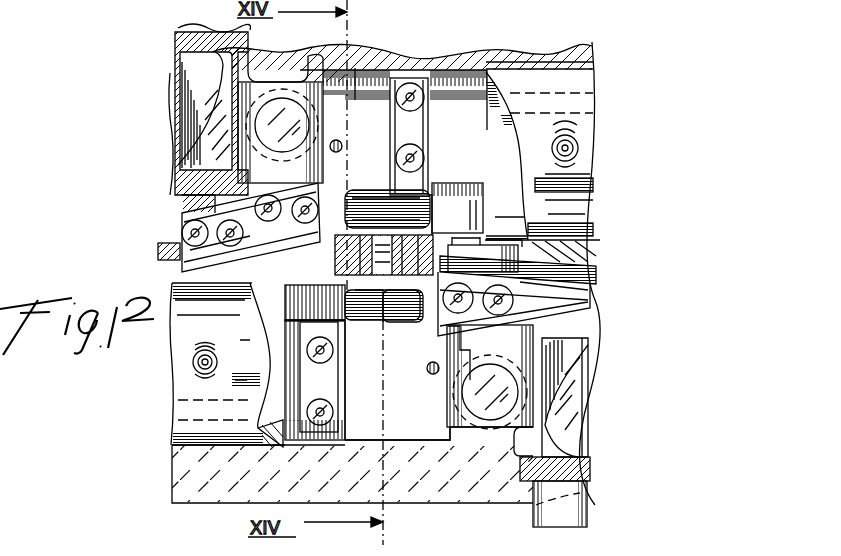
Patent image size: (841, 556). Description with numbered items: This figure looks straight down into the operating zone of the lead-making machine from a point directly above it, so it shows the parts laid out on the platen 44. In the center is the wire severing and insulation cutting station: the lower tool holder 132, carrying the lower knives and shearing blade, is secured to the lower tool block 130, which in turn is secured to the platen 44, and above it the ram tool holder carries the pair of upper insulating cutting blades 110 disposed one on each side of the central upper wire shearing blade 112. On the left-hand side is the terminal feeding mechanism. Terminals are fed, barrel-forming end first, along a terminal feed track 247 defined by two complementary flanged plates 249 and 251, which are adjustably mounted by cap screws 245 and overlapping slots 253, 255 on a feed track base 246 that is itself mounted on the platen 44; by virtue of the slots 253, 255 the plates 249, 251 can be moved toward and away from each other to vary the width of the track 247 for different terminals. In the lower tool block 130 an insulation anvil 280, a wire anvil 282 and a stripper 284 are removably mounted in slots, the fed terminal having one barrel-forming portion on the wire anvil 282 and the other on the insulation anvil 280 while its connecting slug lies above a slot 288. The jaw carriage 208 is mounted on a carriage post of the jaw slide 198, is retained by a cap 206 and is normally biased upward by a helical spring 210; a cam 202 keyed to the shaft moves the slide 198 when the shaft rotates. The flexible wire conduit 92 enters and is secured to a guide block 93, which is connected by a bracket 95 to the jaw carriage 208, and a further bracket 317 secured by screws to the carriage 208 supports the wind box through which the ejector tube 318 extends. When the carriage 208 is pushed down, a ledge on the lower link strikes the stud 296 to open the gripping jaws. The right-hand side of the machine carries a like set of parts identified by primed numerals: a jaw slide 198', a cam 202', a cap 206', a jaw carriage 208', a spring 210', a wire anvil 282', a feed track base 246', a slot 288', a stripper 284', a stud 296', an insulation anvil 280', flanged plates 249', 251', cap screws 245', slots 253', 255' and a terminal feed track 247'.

The platen 44 is at (529, 50).
The upper end plate 198' is at (184, 102).
The upper side member 202' is at (173, 123).
The upper recess 206' is at (278, 65).
The upper wall portion 208' is at (296, 53).
The upper bearing bore 210' is at (280, 134).
The upper roller support 282' is at (405, 136).
The upper cavity wall 246' is at (480, 156).
The upper guide plate 288' is at (453, 191).
The upper guide wall 284' is at (384, 61).
The upper pin 296' is at (360, 128).
The upper block 280' is at (380, 189).
The upper wire shearing blade 112 is at (428, 222).
The lower tool holder 132 is at (432, 258).
The upper insulating cutting blades 110 is at (355, 278).
The upper plate 251' is at (568, 87).
The upper fastener head 255' is at (608, 130).
The upper screw 245' is at (604, 148).
The upper washer 253' is at (601, 181).
The upper bar 247' is at (601, 206).
The upper strip 249' is at (571, 231).
The ejector tube 318 is at (592, 254).
The bracket 317 is at (559, 301).
The cam 202 is at (599, 397).
The jaw slide 198 is at (584, 487).
The guide block 93 is at (177, 212).
The bracket 95 is at (218, 206).
The flexible wire conduit 92 is at (158, 252).
The flanged plate 249 is at (226, 365).
The terminal feed track 247 is at (177, 326).
The slot 253 is at (157, 358).
The cap screws 245 is at (161, 372).
The slot 255 is at (175, 406).
The flanged plate 251 is at (198, 434).
The slot 288 is at (315, 380).
The feed track base 246 is at (306, 360).
The stripper 284 is at (325, 381).
The lower tool block 130 is at (335, 445).
The insulation anvil 280 is at (411, 323).
The wire anvil 282 is at (390, 334).
The stud 296 is at (415, 384).
The helical spring 210 is at (490, 377).
The jaw carriage 208 is at (397, 447).
The cap 206 is at (497, 447).